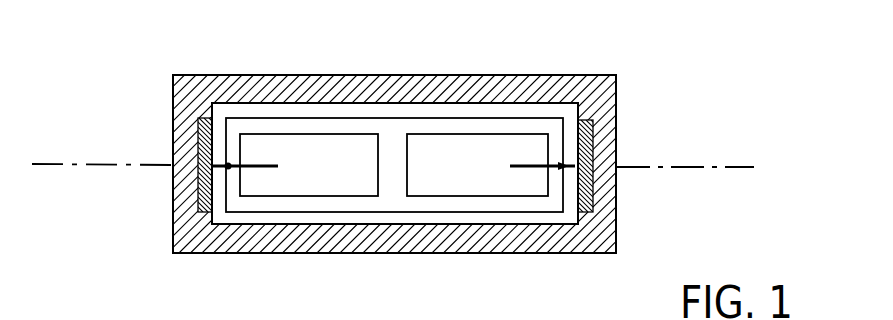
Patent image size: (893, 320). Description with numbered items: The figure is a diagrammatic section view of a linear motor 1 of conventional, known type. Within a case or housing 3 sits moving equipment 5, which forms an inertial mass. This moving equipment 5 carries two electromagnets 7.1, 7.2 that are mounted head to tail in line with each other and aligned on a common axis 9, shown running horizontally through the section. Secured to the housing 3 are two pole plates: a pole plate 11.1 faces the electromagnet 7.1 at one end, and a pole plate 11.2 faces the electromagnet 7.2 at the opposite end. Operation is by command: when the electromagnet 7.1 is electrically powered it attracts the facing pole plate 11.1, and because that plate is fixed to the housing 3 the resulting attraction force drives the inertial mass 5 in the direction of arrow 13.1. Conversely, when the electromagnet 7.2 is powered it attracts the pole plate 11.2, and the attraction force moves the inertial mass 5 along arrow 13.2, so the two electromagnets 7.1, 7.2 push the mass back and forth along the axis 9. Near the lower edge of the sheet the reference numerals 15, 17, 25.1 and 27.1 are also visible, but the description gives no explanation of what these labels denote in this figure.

The linear motor 1 is at (542, 272).
The housing 3 is at (582, 75).
The moving equipment 5 is at (358, 117).
The electromagnet 7.1 is at (294, 134).
The electromagnet 7.2 is at (448, 134).
The common axis 9 is at (640, 166).
The pole plate 11.1 is at (200, 143).
The pole plate 11.2 is at (592, 181).
The arrow 13.1 is at (243, 165).
The arrow 13.2 is at (523, 165).
The element 15 is at (330, 319).
The element 17 is at (368, 319).
The element 25.1 is at (123, 319).
The element 27.1 is at (222, 319).